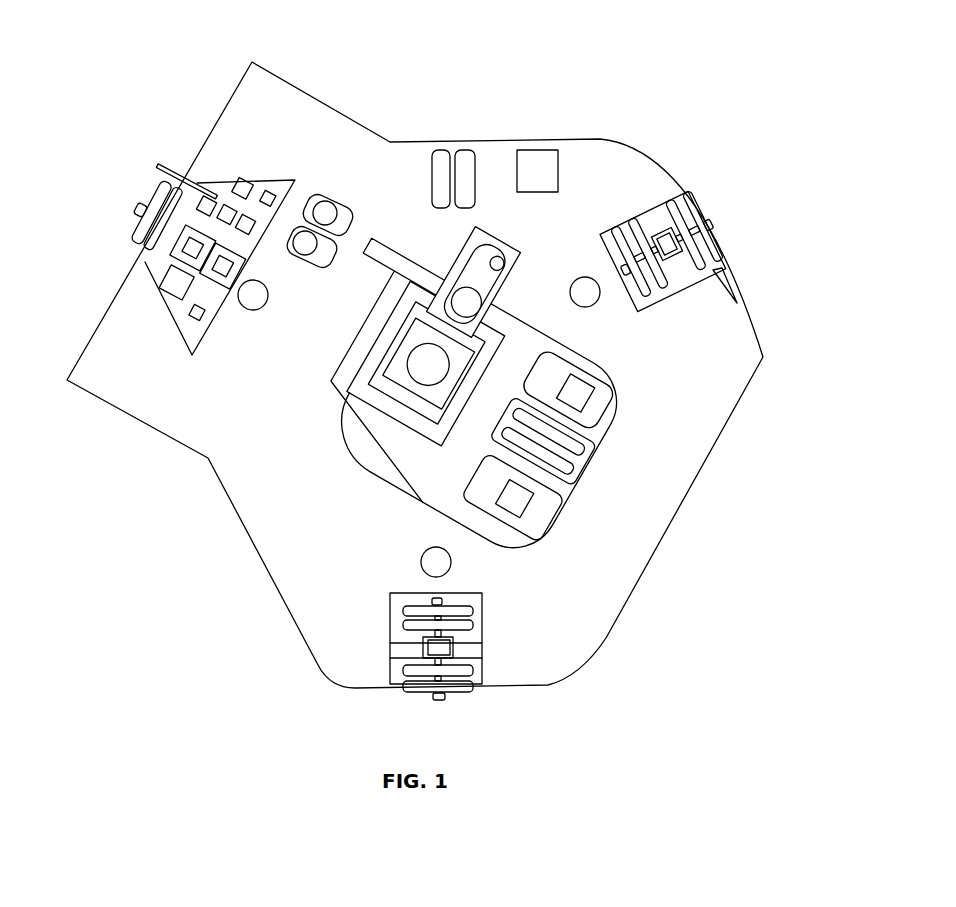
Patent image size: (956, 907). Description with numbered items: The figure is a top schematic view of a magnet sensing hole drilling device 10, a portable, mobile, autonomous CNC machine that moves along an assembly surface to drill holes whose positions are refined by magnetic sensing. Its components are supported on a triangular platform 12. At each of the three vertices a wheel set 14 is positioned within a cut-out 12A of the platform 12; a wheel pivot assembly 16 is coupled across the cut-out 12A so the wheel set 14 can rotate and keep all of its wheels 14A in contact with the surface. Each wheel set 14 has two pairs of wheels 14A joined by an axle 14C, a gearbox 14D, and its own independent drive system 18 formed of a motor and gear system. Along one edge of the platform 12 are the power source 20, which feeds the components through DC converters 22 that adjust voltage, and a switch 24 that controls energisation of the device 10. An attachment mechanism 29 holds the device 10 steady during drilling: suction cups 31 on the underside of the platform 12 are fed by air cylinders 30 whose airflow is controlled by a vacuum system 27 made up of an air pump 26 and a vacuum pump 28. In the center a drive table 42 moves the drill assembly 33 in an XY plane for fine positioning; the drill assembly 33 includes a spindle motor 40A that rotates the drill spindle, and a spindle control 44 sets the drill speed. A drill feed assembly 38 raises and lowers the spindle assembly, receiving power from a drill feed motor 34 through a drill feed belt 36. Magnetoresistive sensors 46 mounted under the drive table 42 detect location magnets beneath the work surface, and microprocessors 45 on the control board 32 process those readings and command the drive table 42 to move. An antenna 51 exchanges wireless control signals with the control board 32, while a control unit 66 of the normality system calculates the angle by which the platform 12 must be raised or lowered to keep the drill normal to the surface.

The magnet sensing hole drilling device 10 is at (723, 42).
The platform 12 is at (663, 532).
The cut-out 12A is at (408, 602).
The wheel set 14 is at (435, 413).
The wheel 14A is at (715, 248).
The axle 14C is at (440, 697).
The gearbox 14D is at (663, 210).
The wheel pivot assembly 16 is at (475, 655).
The drive system 18 is at (427, 645).
The power source 20 is at (478, 374).
The DC converter 22 is at (438, 157).
The switch 24 is at (523, 165).
The air pump 26 is at (343, 217).
The vacuum system 27 is at (308, 190).
The vacuum pump 28 is at (303, 230).
The attachment mechanism 29 is at (585, 267).
The air cylinder 30 is at (250, 311).
The suction cup 31 is at (577, 287).
The control board 32 is at (163, 253).
The drill assembly 33 is at (429, 363).
The drill feed motor 34 is at (473, 282).
The drill feed belt 36 is at (474, 284).
The drill feed assembly 38 is at (426, 363).
The spindle motor 40A is at (428, 364).
The drive table 42 is at (397, 370).
The spindle control 44 is at (543, 441).
The microprocessor 45 is at (210, 208).
The sensor 46 is at (429, 363).
The antenna 51 is at (177, 170).
The control unit 66 is at (233, 185).